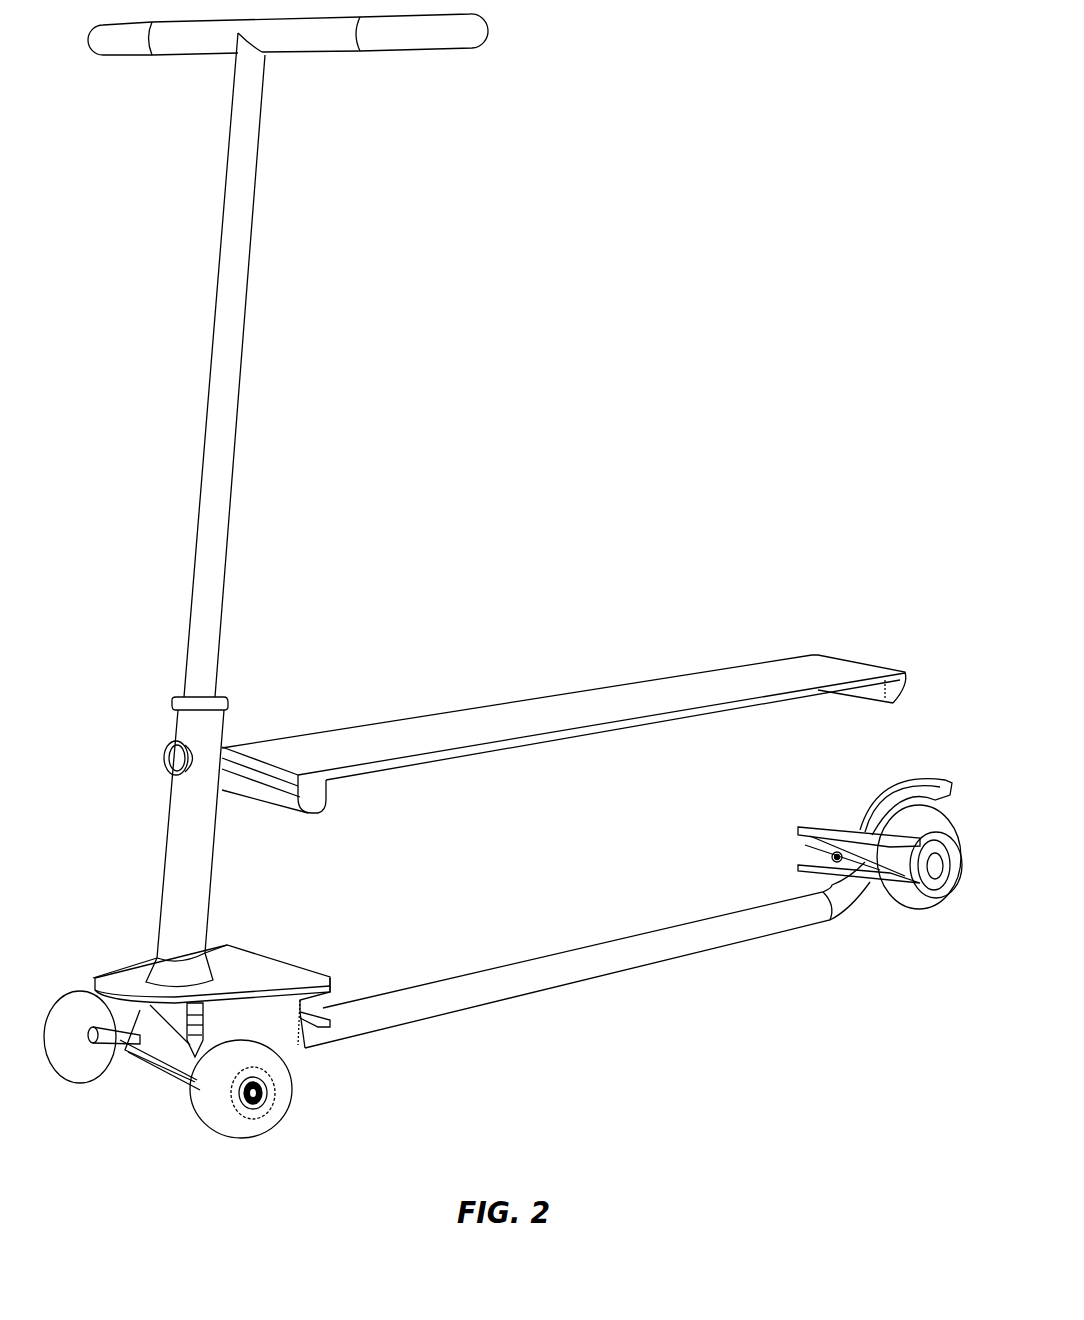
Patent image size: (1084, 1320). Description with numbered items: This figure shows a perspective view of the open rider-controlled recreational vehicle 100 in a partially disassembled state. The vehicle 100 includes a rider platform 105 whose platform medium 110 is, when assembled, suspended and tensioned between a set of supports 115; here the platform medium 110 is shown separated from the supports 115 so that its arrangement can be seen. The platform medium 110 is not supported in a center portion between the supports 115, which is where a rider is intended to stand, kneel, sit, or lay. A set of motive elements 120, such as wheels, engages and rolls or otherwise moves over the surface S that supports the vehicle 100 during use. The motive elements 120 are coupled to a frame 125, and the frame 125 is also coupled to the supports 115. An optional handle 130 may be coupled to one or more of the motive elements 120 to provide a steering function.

The recreational vehicle 100 is at (503, 592).
The rider platform 105 is at (785, 558).
The platform medium 110 is at (520, 715).
The supports 115 is at (833, 822).
The motive elements 120 is at (902, 907).
The frame 125 is at (510, 985).
The handle 130 is at (230, 350).
The surface S is at (675, 1038).